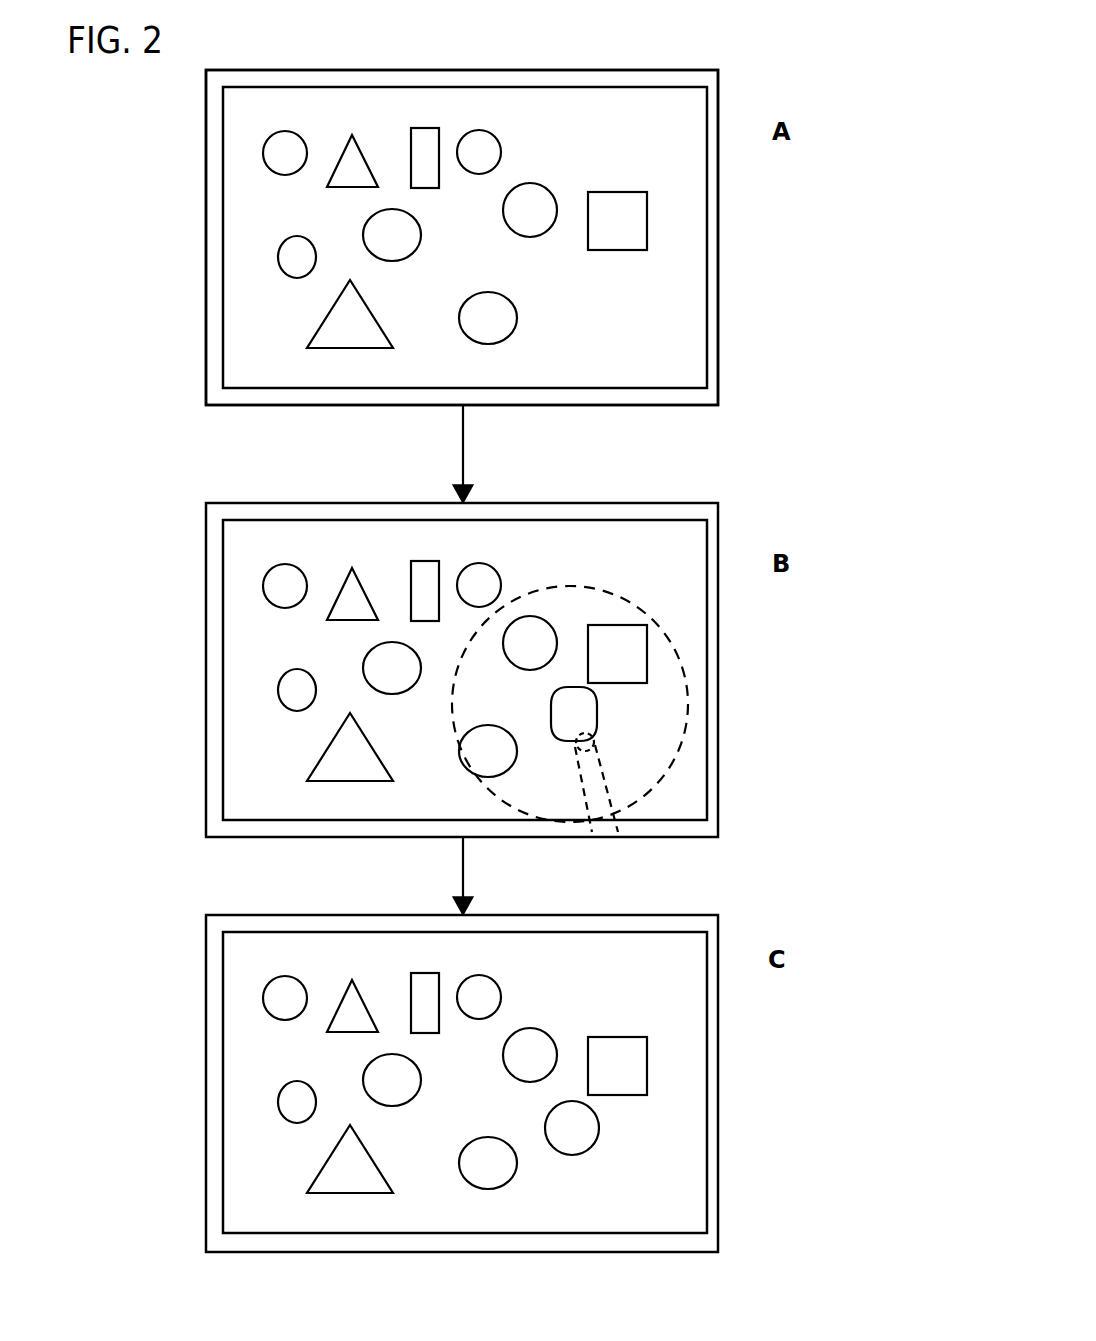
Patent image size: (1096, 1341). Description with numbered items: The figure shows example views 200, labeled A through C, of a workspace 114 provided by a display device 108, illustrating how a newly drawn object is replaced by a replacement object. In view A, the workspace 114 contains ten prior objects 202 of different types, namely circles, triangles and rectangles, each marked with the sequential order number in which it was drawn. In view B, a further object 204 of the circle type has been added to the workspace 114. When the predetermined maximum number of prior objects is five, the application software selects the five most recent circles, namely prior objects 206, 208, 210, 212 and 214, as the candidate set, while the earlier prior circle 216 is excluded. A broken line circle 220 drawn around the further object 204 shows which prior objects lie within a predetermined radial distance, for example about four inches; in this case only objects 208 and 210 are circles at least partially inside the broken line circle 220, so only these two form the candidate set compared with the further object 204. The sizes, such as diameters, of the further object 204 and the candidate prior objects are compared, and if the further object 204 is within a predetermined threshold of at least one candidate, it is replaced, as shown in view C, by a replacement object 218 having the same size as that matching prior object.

The display device 108 is at (207, 184).
The workspace 114 is at (312, 105).
The example views 200 is at (774, 67).
The prior objects 202 is at (255, 281).
The further object 204 is at (598, 713).
The prior object 206 is at (364, 243).
The prior object 208 is at (540, 183).
The prior object 210 is at (459, 318).
The prior object 212 is at (280, 246).
The prior object 214 is at (464, 141).
The prior circle 216 is at (265, 144).
The replacement object 218 is at (592, 1146).
The broken line circle 220 is at (638, 608).